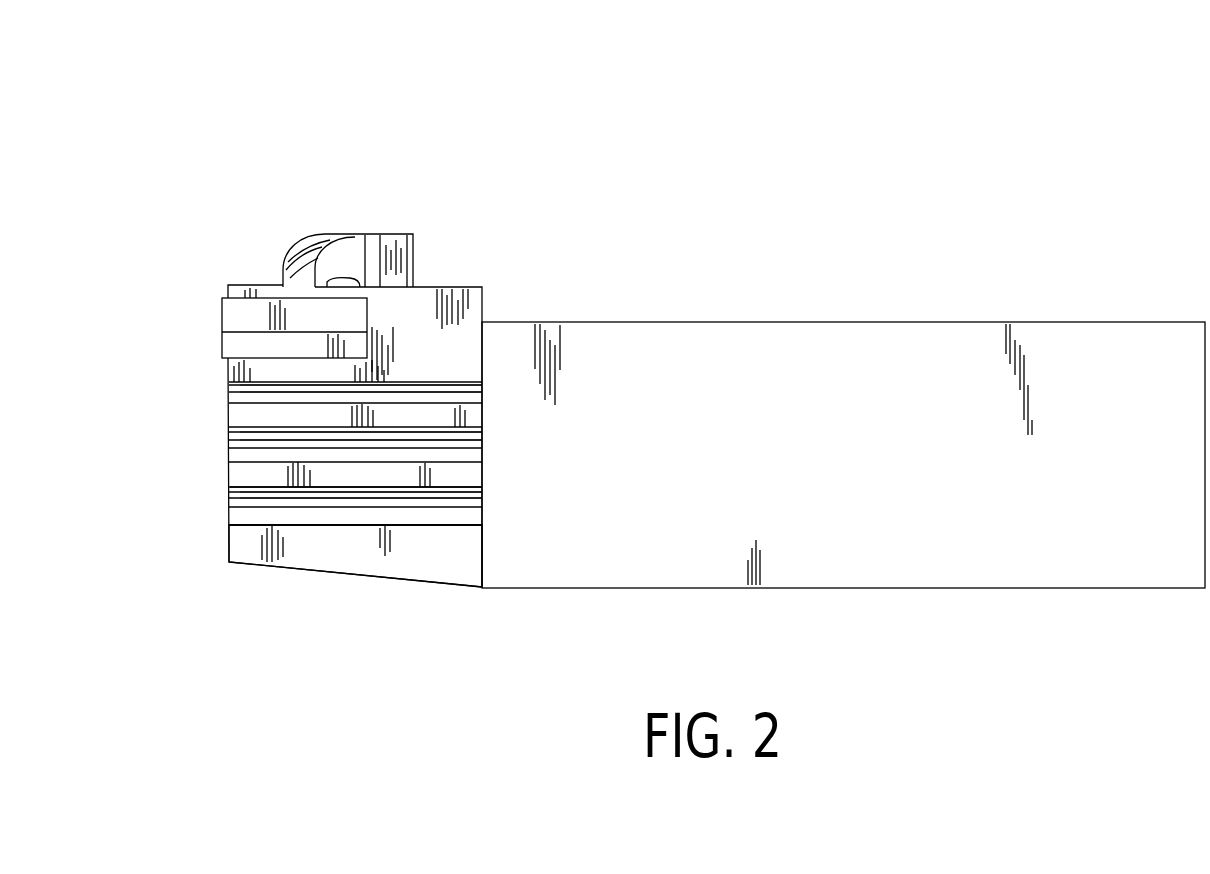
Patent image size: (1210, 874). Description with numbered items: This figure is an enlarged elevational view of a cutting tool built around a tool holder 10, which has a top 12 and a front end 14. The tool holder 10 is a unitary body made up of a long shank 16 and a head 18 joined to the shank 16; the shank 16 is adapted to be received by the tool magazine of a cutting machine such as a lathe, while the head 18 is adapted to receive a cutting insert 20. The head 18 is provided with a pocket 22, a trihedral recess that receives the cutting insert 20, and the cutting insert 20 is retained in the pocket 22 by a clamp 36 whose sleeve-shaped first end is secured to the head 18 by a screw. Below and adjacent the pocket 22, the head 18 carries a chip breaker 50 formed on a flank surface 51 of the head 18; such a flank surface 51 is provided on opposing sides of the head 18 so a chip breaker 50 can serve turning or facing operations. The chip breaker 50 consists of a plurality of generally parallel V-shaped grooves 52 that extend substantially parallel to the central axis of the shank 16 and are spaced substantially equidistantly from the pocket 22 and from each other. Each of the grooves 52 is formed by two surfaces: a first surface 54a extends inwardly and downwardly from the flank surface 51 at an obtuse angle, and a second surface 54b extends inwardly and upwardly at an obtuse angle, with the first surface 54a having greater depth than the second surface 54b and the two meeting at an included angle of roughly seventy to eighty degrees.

The tool holder 10 is at (1000, 62).
The top 12 is at (830, 210).
The front end 14 is at (261, 472).
The shank portion 16 is at (1053, 321).
The head portion 18 is at (447, 287).
The cutting insert 20 is at (205, 300).
The pocket 22 is at (195, 362).
The clamp 36 is at (385, 210).
The chip breaker 50 is at (185, 500).
The flank surface 51 is at (435, 555).
The V-shaped grooves 52 is at (472, 393).
The first surface 54a is at (252, 490).
The second surface 54b is at (230, 513).